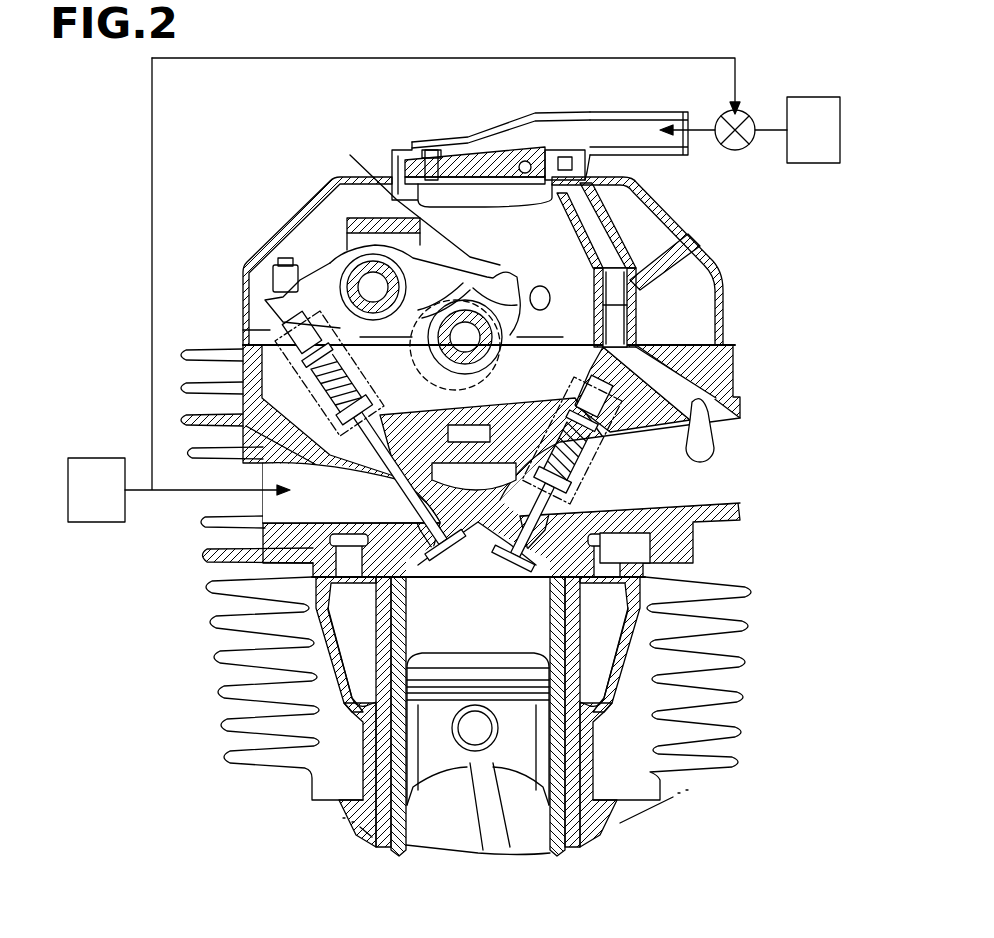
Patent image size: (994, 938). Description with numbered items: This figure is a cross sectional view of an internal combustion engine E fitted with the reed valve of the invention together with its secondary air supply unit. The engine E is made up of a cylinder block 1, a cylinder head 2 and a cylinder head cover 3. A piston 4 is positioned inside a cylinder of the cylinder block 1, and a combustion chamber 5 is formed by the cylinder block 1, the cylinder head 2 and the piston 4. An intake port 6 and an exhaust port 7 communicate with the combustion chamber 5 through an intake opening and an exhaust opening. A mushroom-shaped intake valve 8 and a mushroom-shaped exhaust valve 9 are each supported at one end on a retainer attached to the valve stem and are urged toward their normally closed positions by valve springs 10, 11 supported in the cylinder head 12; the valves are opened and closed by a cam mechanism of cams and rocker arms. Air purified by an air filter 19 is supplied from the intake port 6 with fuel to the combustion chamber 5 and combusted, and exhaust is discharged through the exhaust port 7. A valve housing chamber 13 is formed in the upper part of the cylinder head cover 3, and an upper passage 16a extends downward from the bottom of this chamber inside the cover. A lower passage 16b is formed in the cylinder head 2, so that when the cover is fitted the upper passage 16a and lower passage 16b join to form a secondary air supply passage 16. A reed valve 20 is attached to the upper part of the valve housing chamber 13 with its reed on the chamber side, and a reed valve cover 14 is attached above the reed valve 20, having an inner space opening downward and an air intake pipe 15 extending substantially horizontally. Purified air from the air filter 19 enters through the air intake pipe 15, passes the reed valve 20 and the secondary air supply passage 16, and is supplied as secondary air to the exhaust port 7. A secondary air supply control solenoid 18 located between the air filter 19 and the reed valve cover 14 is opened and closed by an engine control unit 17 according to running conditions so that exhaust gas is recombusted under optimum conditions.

The cylinder block 1 is at (372, 753).
The cylinder head 2 is at (238, 336).
The cylinder head cover 3 is at (334, 190).
The piston 4 is at (460, 770).
The combustion chamber 5 is at (473, 578).
The intake port 6 is at (300, 505).
The exhaust port 7 is at (614, 495).
The intake valve 8 is at (432, 575).
The exhaust valve 9 is at (520, 575).
The valve spring 10 is at (288, 368).
The valve spring 11 is at (566, 382).
The cylinder head 12 is at (517, 277).
The valve housing chamber 13 is at (446, 140).
The reed valve cover 14 is at (474, 137).
The air intake pipe 15 is at (644, 112).
The secondary air supply passage 16 is at (800, 275).
The upper passage 16a is at (620, 285).
The lower passage 16b is at (662, 388).
The engine control unit 17 is at (799, 144).
The secondary air supply control solenoid 18 is at (746, 112).
The air filter 19 is at (82, 505).
The reed valve 20 is at (541, 136).
The engine E is at (155, 636).